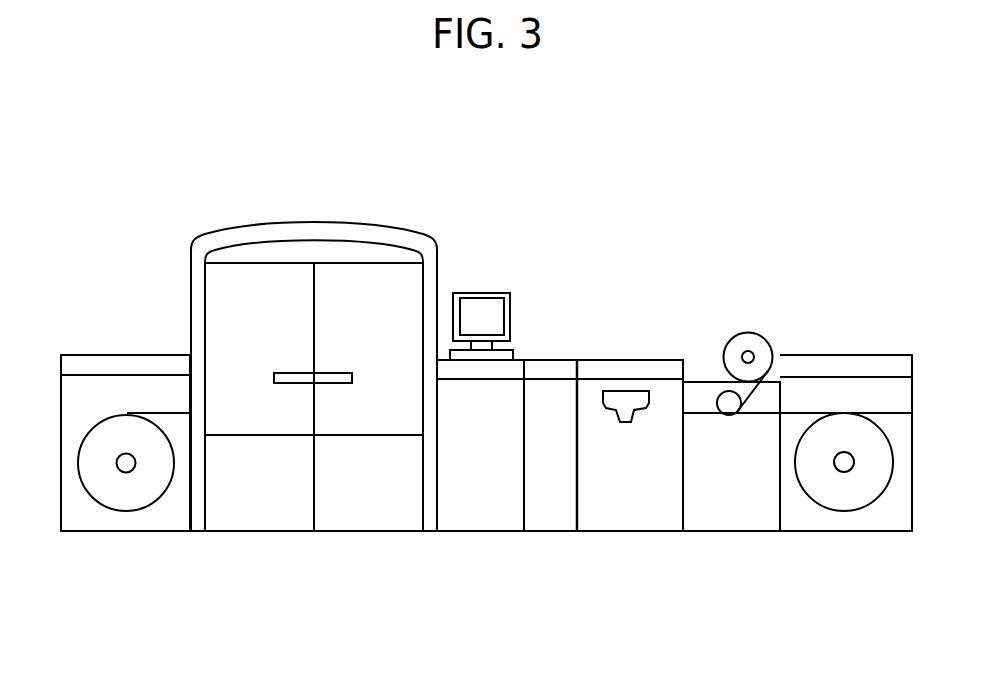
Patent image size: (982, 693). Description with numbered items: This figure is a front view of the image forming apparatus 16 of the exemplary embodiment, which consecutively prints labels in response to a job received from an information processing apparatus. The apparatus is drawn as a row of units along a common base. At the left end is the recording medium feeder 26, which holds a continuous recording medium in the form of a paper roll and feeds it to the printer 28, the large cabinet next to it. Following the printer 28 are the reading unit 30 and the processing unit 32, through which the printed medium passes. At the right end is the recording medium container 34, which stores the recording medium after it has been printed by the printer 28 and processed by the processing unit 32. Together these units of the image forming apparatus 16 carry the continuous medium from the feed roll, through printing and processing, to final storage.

The image forming apparatus 16 is at (560, 190).
The recording medium feeder 26 is at (170, 522).
The printer 28 is at (397, 545).
The reading unit 30 is at (627, 397).
The processing unit 32 is at (747, 545).
The recording medium container 34 is at (863, 388).